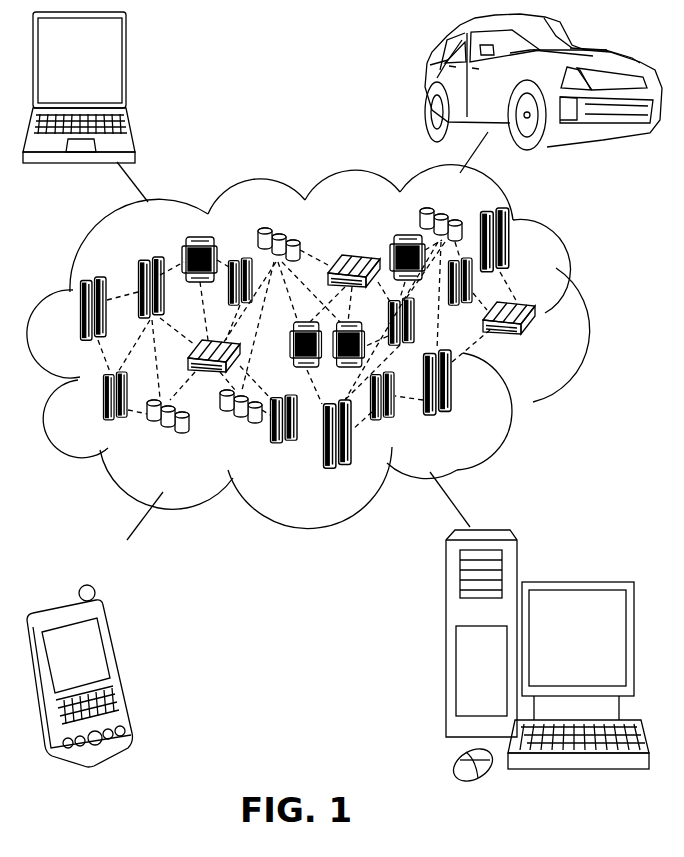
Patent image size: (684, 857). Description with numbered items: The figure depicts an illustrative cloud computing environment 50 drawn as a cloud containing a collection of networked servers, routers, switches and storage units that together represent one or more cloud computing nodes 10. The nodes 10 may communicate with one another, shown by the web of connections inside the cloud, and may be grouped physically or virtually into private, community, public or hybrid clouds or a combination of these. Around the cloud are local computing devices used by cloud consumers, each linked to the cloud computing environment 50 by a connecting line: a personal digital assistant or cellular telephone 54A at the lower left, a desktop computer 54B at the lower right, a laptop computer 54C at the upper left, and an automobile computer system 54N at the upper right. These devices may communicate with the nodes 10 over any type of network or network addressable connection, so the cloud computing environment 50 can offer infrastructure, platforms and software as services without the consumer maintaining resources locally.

The cloud computing nodes 10 is at (535, 346).
The cloud computing environment 50 is at (574, 314).
The personal digital assistant or cellular telephone 54A is at (122, 667).
The desktop computer 54B is at (575, 582).
The laptop computer 54C is at (128, 67).
The automobile computer system 54N is at (427, 82).